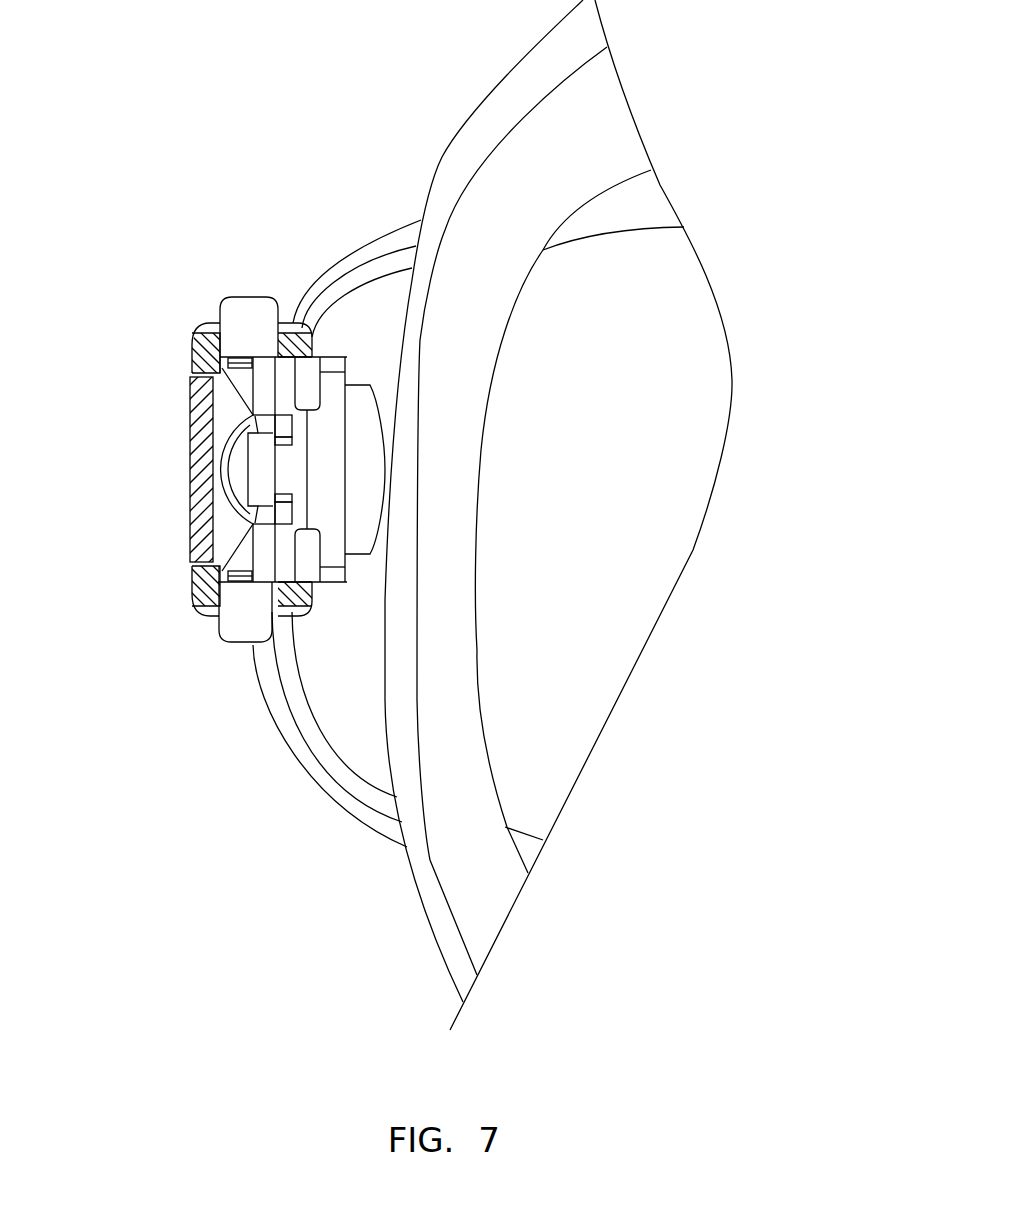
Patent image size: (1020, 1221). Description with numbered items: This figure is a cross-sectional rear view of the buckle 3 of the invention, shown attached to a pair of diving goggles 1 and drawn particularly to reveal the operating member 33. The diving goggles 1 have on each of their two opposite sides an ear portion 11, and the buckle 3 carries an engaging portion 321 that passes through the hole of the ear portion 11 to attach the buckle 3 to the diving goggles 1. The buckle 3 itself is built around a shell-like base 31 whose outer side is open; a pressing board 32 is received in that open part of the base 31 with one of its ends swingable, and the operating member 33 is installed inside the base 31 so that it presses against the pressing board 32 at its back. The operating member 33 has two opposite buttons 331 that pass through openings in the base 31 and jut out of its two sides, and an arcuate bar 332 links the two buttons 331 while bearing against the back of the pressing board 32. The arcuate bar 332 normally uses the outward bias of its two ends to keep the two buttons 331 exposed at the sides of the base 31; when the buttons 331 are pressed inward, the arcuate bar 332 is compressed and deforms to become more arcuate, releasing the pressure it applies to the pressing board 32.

The diving goggles 1 is at (470, 152).
The buckle 3 is at (330, 481).
The ear portion 11 is at (328, 512).
The base 31 is at (198, 343).
The pressing board 32 is at (197, 418).
The operating member 33 is at (198, 372).
The engaging portion 321 is at (363, 413).
The button 331 is at (243, 312).
The arcuate bar 332 is at (193, 503).